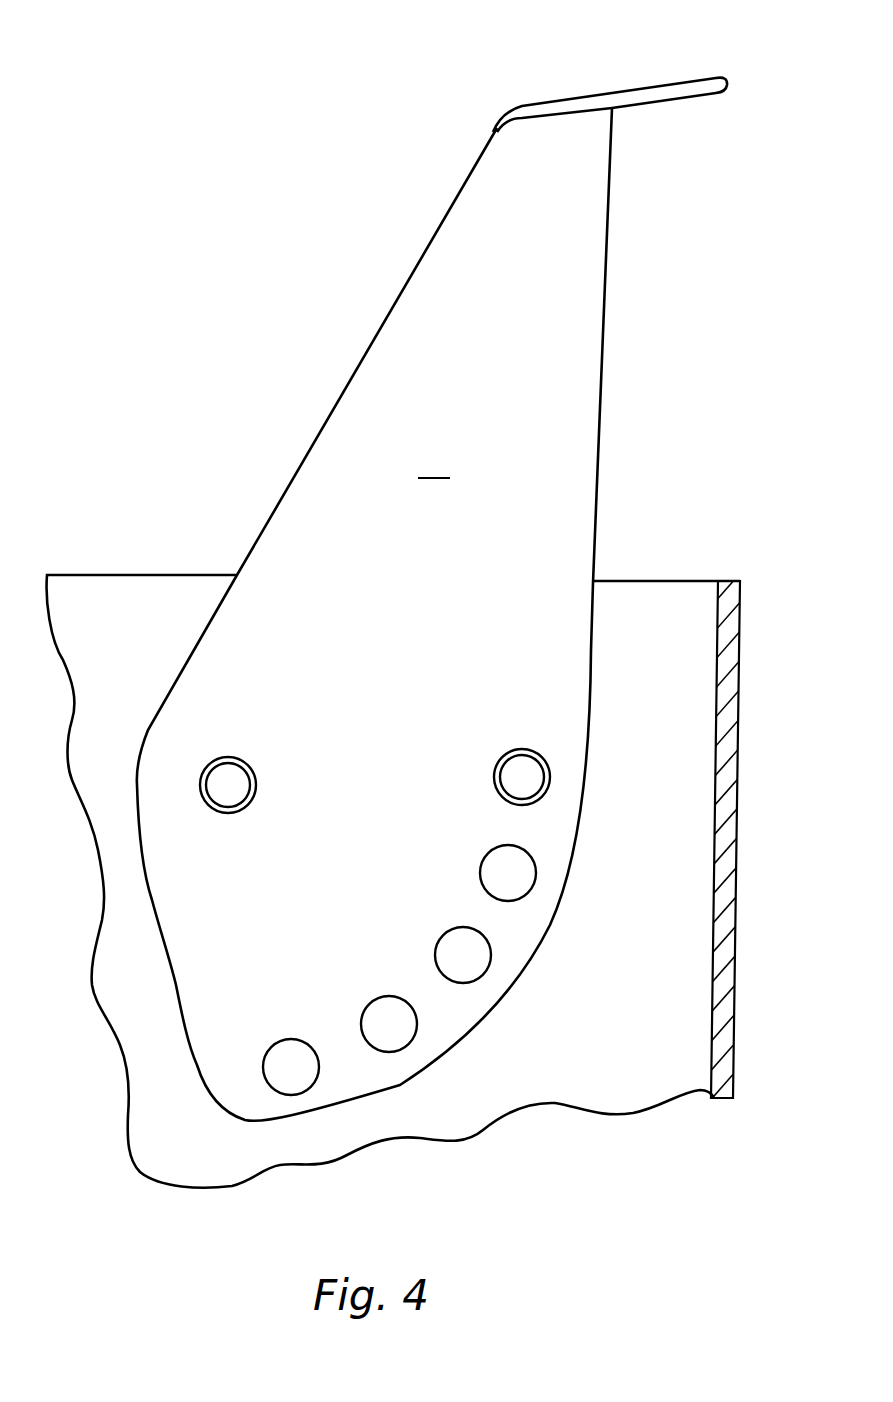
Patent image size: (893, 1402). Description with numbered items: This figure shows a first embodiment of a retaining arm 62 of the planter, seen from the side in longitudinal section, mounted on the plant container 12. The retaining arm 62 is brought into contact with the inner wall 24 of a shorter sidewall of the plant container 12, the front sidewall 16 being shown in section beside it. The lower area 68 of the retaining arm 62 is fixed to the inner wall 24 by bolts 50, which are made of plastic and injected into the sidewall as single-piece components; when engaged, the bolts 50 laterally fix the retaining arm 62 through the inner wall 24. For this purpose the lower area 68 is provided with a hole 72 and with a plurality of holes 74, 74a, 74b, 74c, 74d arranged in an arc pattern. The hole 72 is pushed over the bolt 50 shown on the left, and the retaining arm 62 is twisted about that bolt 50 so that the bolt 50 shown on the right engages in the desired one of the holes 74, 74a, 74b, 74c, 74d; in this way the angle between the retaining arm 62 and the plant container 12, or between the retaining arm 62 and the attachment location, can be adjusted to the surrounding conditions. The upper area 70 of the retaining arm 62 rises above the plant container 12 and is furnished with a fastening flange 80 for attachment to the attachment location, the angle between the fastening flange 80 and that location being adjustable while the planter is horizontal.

The plant container 12 is at (616, 580).
The front sidewall 16 is at (738, 857).
The inner wall 24 is at (660, 630).
The bolt 50 is at (229, 773).
The retaining arm 62 is at (435, 463).
The lower area 68 is at (190, 637).
The upper area 70 is at (318, 414).
The hole 72 is at (227, 814).
The hole 74 is at (494, 796).
The hole 74a is at (480, 868).
The hole 74b is at (436, 952).
The hole 74c is at (362, 1013).
The hole 74d is at (266, 1046).
The fastening flange 80 is at (667, 88).